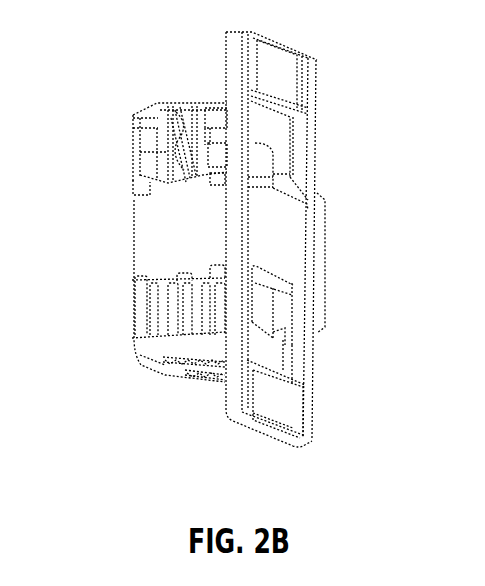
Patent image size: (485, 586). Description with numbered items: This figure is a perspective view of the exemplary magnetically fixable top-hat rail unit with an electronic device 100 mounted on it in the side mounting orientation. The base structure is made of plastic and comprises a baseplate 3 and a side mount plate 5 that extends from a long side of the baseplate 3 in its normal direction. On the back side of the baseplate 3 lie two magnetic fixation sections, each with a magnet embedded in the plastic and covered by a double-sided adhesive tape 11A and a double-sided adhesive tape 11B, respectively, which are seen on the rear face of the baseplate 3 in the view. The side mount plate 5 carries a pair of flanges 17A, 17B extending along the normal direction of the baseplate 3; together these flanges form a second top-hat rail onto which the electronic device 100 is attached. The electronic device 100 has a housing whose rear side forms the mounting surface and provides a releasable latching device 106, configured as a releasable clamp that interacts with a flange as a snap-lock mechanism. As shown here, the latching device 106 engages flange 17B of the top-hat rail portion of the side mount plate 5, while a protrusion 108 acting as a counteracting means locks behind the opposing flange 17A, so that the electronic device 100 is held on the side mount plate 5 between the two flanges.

The baseplate 3 is at (217, 80).
The side mount plate 5 is at (150, 240).
The double-sided adhesive tape 11A is at (278, 413).
The double-sided adhesive tape 11B is at (284, 72).
The flange 17A is at (176, 277).
The flange 17B is at (178, 190).
The electronic device 100 is at (160, 388).
The latching device 106 is at (168, 148).
The protrusion 108 is at (178, 287).